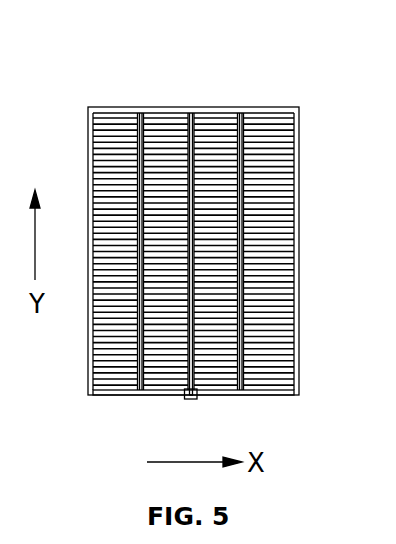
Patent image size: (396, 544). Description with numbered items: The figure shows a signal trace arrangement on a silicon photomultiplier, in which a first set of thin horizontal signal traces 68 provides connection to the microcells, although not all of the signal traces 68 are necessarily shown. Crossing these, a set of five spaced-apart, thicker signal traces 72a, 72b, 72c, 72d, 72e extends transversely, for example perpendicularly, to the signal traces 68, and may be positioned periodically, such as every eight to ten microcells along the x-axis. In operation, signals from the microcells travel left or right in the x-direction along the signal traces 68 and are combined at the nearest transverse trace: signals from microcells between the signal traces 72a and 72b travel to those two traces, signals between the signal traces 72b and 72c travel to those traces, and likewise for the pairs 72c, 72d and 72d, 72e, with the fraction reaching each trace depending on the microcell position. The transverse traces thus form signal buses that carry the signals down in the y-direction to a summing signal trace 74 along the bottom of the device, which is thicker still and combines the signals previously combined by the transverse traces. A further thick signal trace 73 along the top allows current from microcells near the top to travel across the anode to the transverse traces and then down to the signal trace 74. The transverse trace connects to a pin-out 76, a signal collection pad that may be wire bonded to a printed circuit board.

The signal traces 68 is at (158, 121).
The signal trace 72a is at (92, 163).
The signal trace 72b is at (141, 113).
The signal trace 72c is at (192, 115).
The signal trace 72d is at (240, 392).
The signal trace 72e is at (297, 184).
The signal trace 73 is at (110, 110).
The signal trace 74 is at (281, 396).
The pin-out 76 is at (190, 399).